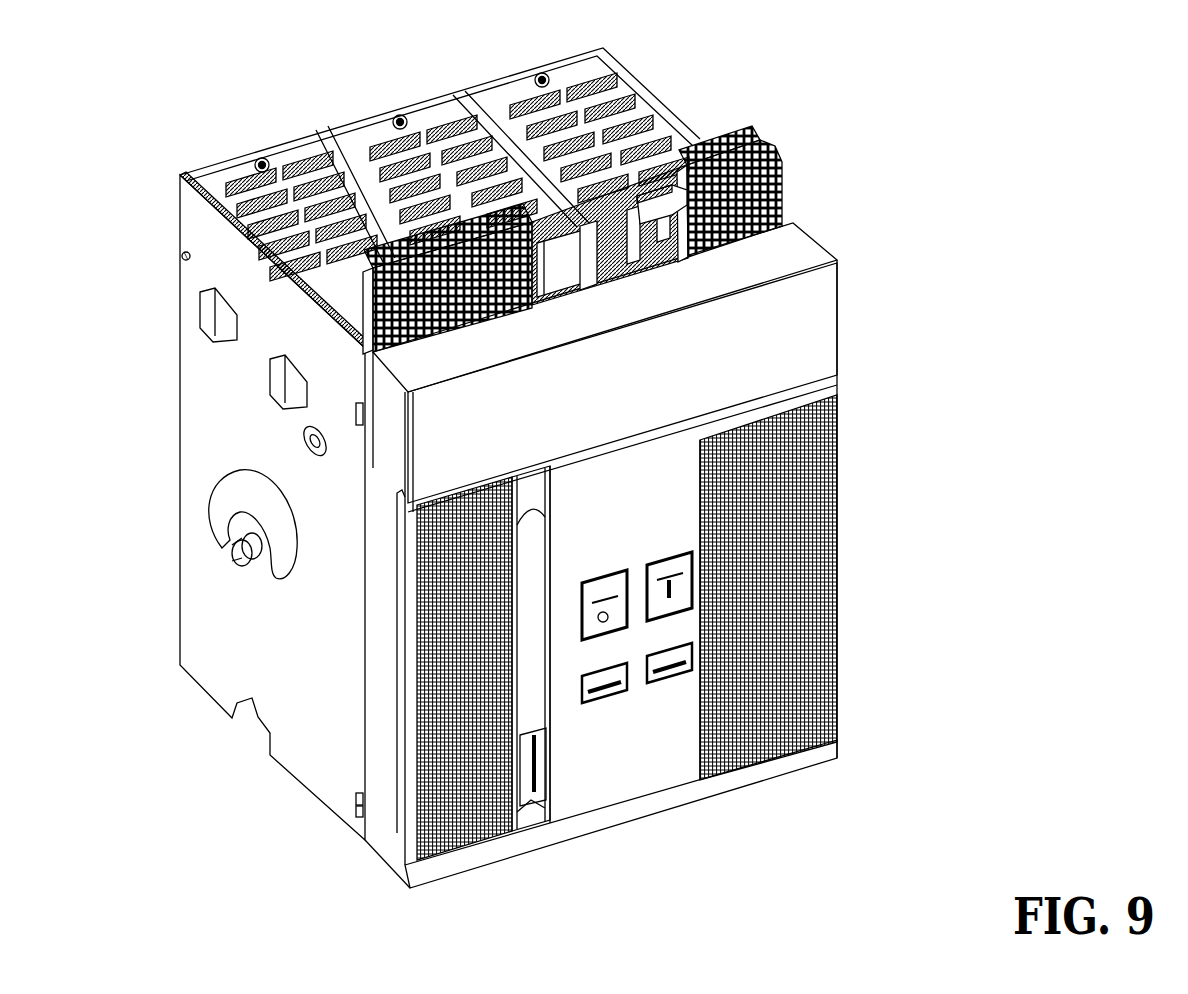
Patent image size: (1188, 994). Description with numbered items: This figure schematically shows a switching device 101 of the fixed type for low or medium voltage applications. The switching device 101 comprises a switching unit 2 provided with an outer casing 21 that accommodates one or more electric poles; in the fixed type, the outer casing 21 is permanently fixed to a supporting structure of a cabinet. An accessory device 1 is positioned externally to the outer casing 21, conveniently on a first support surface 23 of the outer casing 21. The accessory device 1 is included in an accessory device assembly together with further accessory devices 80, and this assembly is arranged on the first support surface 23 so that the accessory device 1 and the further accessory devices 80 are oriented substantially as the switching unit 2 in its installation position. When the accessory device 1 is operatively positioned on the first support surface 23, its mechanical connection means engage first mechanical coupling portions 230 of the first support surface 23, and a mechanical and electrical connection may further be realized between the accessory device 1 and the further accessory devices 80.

The switching device of the fixed type 101 is at (828, 95).
The first support surface 23 is at (814, 192).
The switching unit 2 is at (842, 493).
The further accessory devices 80 is at (641, 233).
The accessory device 1 is at (550, 270).
The first mechanical coupling portions 230 is at (548, 297).
The outer casing 21 is at (225, 668).